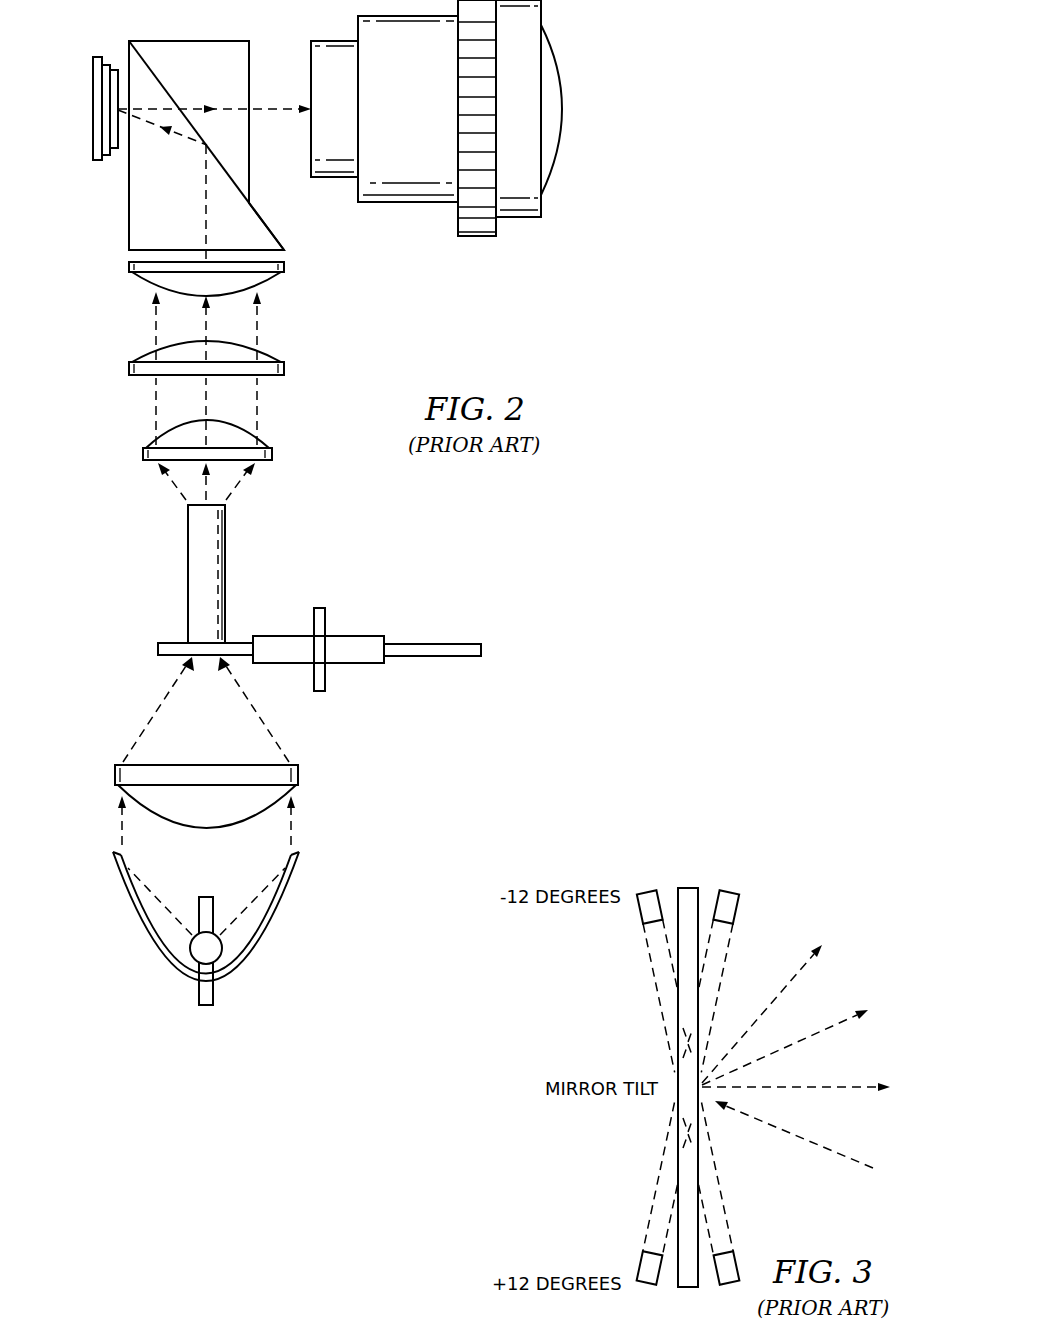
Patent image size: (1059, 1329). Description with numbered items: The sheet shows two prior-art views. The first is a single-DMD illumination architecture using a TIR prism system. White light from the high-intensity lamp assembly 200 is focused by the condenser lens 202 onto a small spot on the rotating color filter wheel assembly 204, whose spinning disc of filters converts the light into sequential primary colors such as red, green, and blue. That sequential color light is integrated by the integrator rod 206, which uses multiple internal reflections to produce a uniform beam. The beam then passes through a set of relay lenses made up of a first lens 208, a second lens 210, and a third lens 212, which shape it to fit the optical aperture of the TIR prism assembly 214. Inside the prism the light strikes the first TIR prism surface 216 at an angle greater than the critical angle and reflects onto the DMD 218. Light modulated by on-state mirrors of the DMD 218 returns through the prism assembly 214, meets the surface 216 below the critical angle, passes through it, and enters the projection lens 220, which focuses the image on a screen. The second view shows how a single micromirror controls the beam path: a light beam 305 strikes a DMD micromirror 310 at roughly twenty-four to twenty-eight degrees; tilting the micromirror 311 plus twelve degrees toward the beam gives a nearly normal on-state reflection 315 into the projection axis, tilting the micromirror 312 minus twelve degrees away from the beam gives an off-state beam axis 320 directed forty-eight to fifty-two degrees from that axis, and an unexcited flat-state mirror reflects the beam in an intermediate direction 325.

In FIG. 2, the high-intensity lamp assembly 200 is at (132, 912).
In FIG. 2, the condenser lens 202 is at (115, 775).
In FIG. 2, the rotating color filter wheel assembly 204 is at (366, 635).
In FIG. 2, the integrator rod 206 is at (188, 572).
In FIG. 2, the first relay lens 208 is at (143, 452).
In FIG. 2, the second relay lens 210 is at (131, 368).
In FIG. 2, the third relay lens 212 is at (285, 266).
In FIG. 2, the TIR prism assembly 214 is at (129, 213).
In FIG. 2, the first TIR prism surface 216 is at (165, 87).
In FIG. 2, the DMD 218 is at (92, 88).
In FIG. 2, the projection lens 220 is at (562, 108).
In FIG. 3, the light beam 305 is at (828, 1150).
In FIG. 3, the DMD micromirror 310 is at (688, 886).
In FIG. 3, the micromirror tilted plus 12 degrees 311 is at (729, 892).
In FIG. 3, the micromirror tilted minus 12 degrees 312 is at (647, 890).
In FIG. 3, the on-state reflection 315 is at (848, 1082).
In FIG. 3, the off-state beam axis 320 is at (797, 970).
In FIG. 3, the flat-state reflection direction 325 is at (833, 1020).